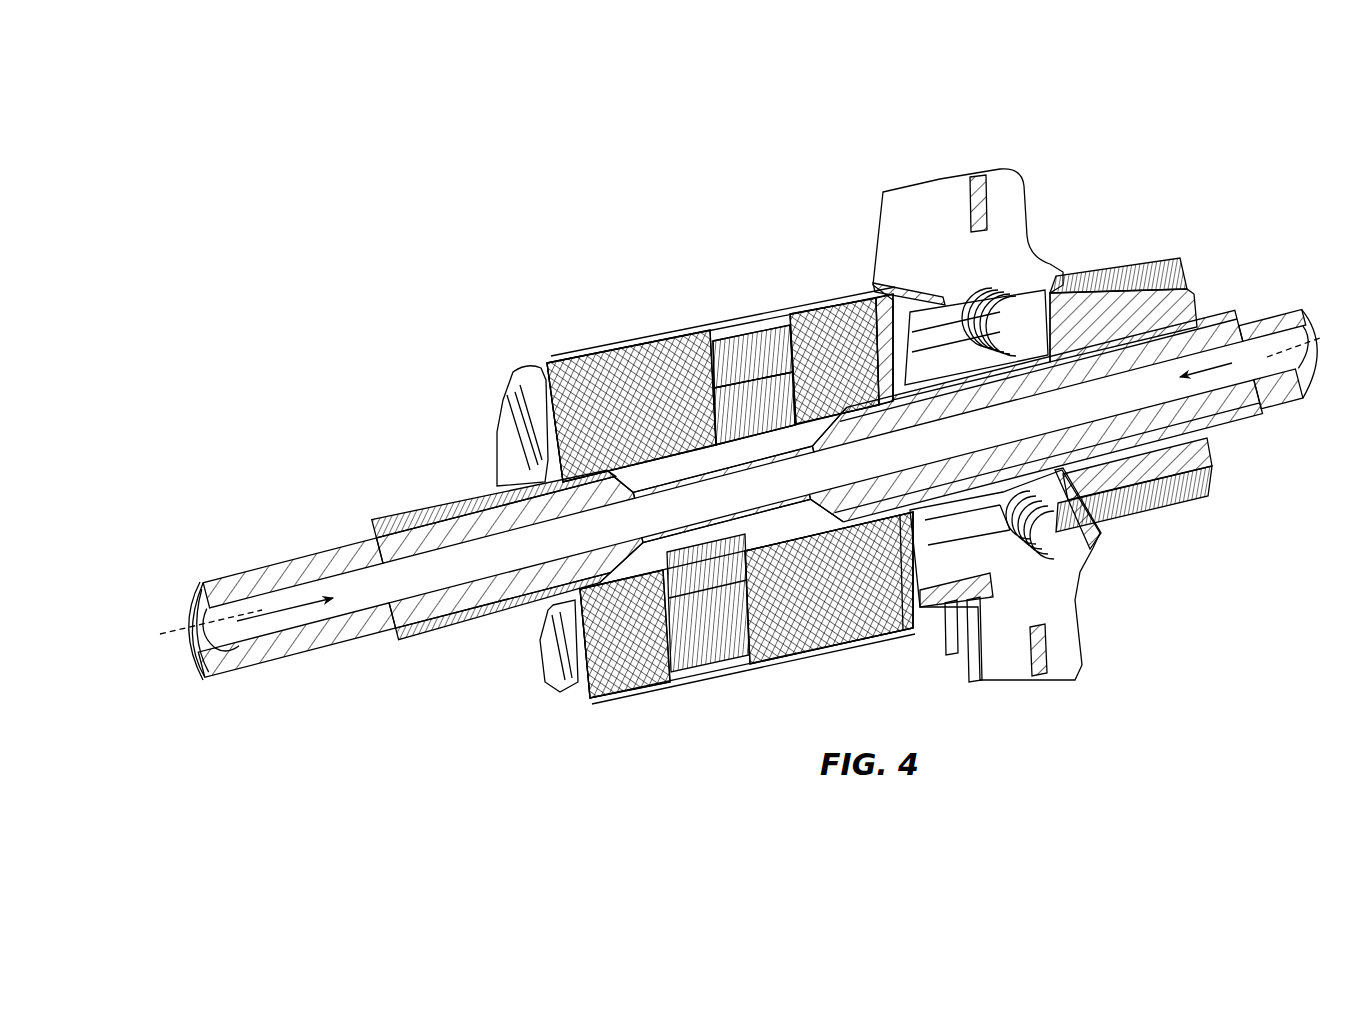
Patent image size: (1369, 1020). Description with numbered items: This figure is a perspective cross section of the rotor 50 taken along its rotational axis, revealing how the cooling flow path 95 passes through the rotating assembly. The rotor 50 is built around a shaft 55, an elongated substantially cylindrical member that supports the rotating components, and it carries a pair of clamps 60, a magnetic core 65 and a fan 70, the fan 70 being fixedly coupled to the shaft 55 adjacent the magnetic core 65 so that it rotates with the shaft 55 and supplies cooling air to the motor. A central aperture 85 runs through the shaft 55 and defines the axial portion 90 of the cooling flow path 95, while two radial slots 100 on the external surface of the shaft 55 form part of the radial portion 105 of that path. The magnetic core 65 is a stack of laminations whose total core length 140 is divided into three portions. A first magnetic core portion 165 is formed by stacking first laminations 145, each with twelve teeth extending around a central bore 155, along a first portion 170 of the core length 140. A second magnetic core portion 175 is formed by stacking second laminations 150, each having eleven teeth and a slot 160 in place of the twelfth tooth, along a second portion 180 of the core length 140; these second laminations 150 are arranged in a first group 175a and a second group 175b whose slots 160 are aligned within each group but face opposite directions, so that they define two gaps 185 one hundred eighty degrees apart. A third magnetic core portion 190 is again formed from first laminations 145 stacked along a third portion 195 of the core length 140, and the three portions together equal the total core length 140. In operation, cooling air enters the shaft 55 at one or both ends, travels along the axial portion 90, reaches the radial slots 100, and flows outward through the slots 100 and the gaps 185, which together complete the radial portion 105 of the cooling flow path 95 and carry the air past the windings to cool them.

The rotor 50 is at (968, 88).
The shaft 55 is at (1227, 315).
The clamp 60 is at (528, 476).
The magnetic core 65 is at (818, 675).
The fan 70 is at (1003, 185).
The central aperture 85 is at (195, 660).
The axial portion 90 is at (262, 612).
The cooling flow path 95 is at (930, 445).
The radial slot 100 is at (652, 548).
The radial portion 105 is at (697, 540).
The core length 140 is at (852, 147).
The first lamination 145 is at (604, 700).
The second lamination 150 is at (703, 655).
The central bore 155 is at (565, 608).
The slot 160 is at (748, 665).
The first magnetic core portion 165 is at (572, 352).
The first portion of the core length 170 is at (627, 343).
The second magnetic core portion 175 is at (703, 283).
The first group 175a is at (658, 322).
The second group 175b is at (766, 305).
The second portion of the core length 180 is at (777, 216).
The gap 185 is at (745, 438).
The third magnetic core portion 190 is at (827, 290).
The third portion of the core length 195 is at (865, 290).